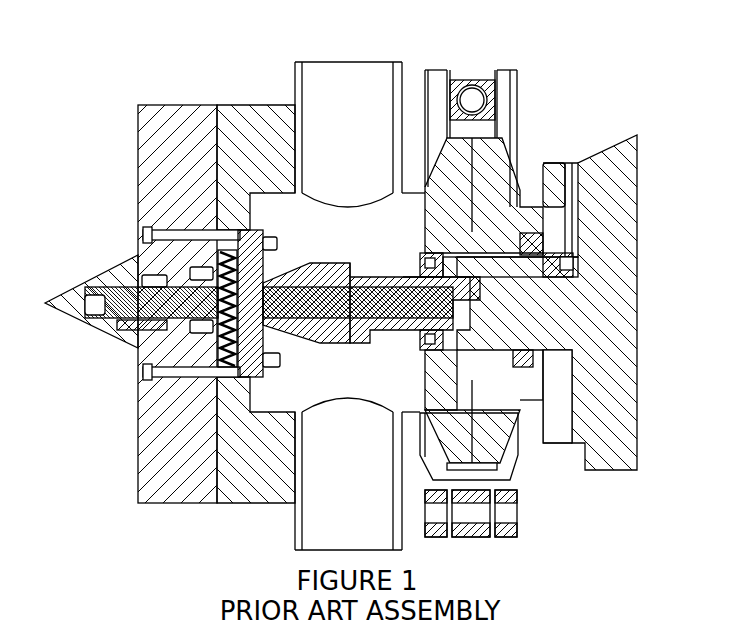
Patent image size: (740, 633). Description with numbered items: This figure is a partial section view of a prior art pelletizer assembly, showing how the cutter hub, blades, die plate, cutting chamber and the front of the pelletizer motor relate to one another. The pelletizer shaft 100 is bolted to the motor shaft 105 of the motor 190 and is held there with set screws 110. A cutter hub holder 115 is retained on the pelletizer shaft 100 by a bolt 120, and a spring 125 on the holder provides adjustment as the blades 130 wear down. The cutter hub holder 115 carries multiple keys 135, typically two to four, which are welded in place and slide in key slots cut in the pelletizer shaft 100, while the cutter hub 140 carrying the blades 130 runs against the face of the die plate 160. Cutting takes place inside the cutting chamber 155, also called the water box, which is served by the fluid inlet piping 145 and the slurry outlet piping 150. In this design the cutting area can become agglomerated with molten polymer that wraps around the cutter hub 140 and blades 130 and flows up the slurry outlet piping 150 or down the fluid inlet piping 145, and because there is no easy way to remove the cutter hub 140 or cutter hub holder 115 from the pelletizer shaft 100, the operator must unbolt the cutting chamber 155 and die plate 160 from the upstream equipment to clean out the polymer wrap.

The pelletizer shaft 100 is at (404, 262).
The motor shaft 105 is at (565, 247).
The set screws 110 is at (530, 238).
The cutter hub holder 115 is at (292, 265).
The bolt 120 is at (253, 268).
The spring 125 is at (313, 273).
The blades 130 is at (271, 233).
The keys 135 is at (346, 260).
The cutter hub 140 is at (215, 101).
The fluid inlet piping 145 is at (294, 526).
The slurry outlet piping 150 is at (403, 66).
The cutting chamber 155 is at (242, 217).
The die plate 160 is at (138, 104).
The motor 190 is at (612, 128).